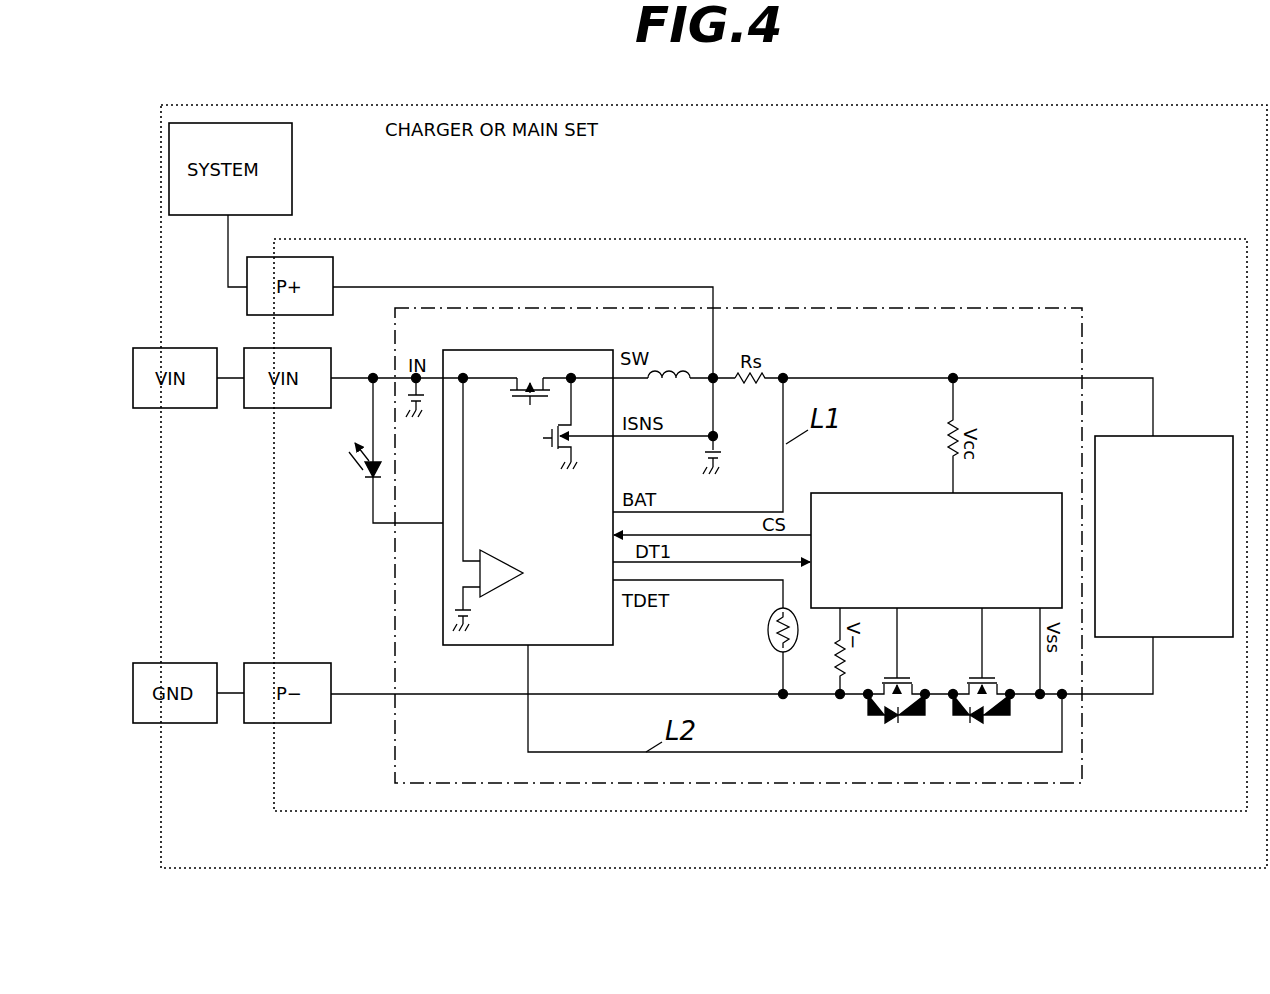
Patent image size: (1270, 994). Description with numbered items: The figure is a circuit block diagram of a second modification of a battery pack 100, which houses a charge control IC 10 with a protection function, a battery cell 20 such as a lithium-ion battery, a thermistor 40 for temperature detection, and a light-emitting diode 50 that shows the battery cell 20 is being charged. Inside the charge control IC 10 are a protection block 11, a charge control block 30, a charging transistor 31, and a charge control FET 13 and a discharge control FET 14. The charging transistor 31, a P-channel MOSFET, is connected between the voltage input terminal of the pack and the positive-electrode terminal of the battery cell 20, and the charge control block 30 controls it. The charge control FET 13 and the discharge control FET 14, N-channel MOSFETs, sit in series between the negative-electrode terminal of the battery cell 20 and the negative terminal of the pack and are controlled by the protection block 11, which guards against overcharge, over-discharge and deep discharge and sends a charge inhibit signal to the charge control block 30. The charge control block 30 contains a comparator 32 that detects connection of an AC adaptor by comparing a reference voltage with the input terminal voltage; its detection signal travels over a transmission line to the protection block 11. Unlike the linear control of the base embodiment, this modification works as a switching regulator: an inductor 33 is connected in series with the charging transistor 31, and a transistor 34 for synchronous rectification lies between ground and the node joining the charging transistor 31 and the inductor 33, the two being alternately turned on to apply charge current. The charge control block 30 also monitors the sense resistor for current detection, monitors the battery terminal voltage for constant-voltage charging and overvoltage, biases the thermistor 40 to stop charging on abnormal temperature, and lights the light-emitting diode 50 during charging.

The battery pack 100 is at (1000, 238).
The charge control IC 10 is at (1025, 308).
The protection block 11 is at (873, 493).
The charge control FET 13 is at (887, 702).
The discharge control FET 14 is at (993, 699).
The battery cell 20 is at (1183, 435).
The charge control block 30 is at (537, 503).
The charging transistor 31 is at (535, 374).
The comparator 32 is at (523, 575).
The inductor 33 is at (672, 366).
The transistor for synchronous rectification 34 is at (578, 437).
The thermistor 40 is at (766, 643).
The LED 50 is at (363, 483).